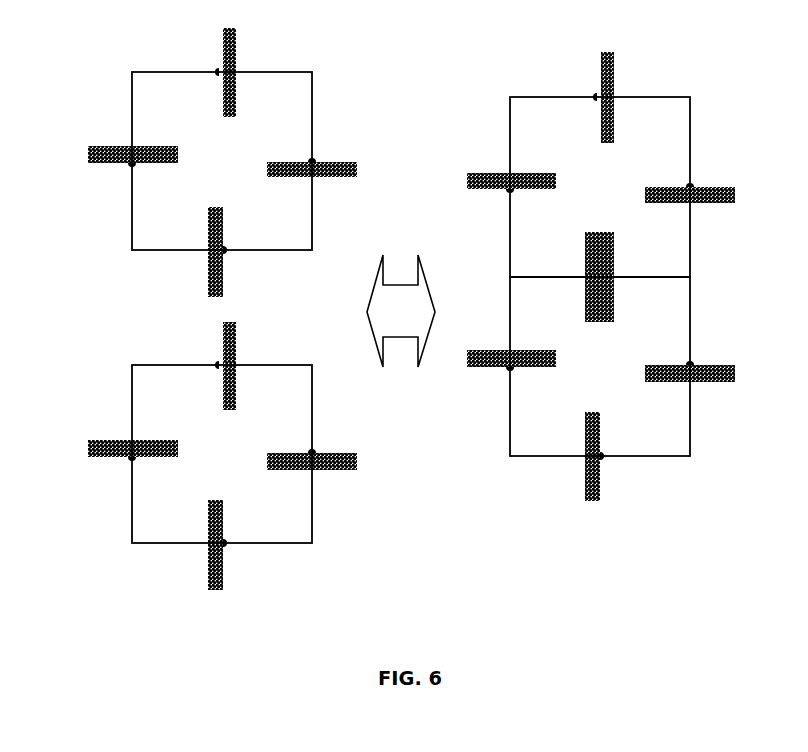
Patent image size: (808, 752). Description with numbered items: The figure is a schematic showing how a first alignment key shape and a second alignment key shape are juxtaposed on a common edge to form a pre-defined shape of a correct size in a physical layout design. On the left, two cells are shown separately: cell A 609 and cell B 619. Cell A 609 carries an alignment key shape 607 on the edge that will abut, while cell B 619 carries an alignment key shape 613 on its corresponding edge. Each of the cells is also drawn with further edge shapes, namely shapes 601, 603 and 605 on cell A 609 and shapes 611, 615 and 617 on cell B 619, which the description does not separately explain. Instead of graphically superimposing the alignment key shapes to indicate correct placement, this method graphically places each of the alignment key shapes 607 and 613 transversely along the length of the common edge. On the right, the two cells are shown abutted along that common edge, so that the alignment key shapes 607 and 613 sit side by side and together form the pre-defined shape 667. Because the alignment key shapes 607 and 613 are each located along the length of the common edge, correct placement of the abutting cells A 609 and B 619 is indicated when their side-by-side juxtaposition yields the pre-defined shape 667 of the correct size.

The first horizontal conductive line of loop A 601 is at (142, 147).
The first vertical conductive line of loop A 603 is at (237, 62).
The second horizontal conductive line of loop A 605 is at (327, 160).
The alignment key shape 607 is at (222, 280).
The cell A 609 is at (182, 238).
The first horizontal conductive line of loop B 611 is at (142, 440).
The alignment key shape 613 is at (237, 355).
The second horizontal conductive line of loop B 615 is at (327, 450).
The second vertical conductive line of loop B 617 is at (222, 572).
The cell B 619 is at (189, 532).
The pre-defined shape 667 is at (615, 308).